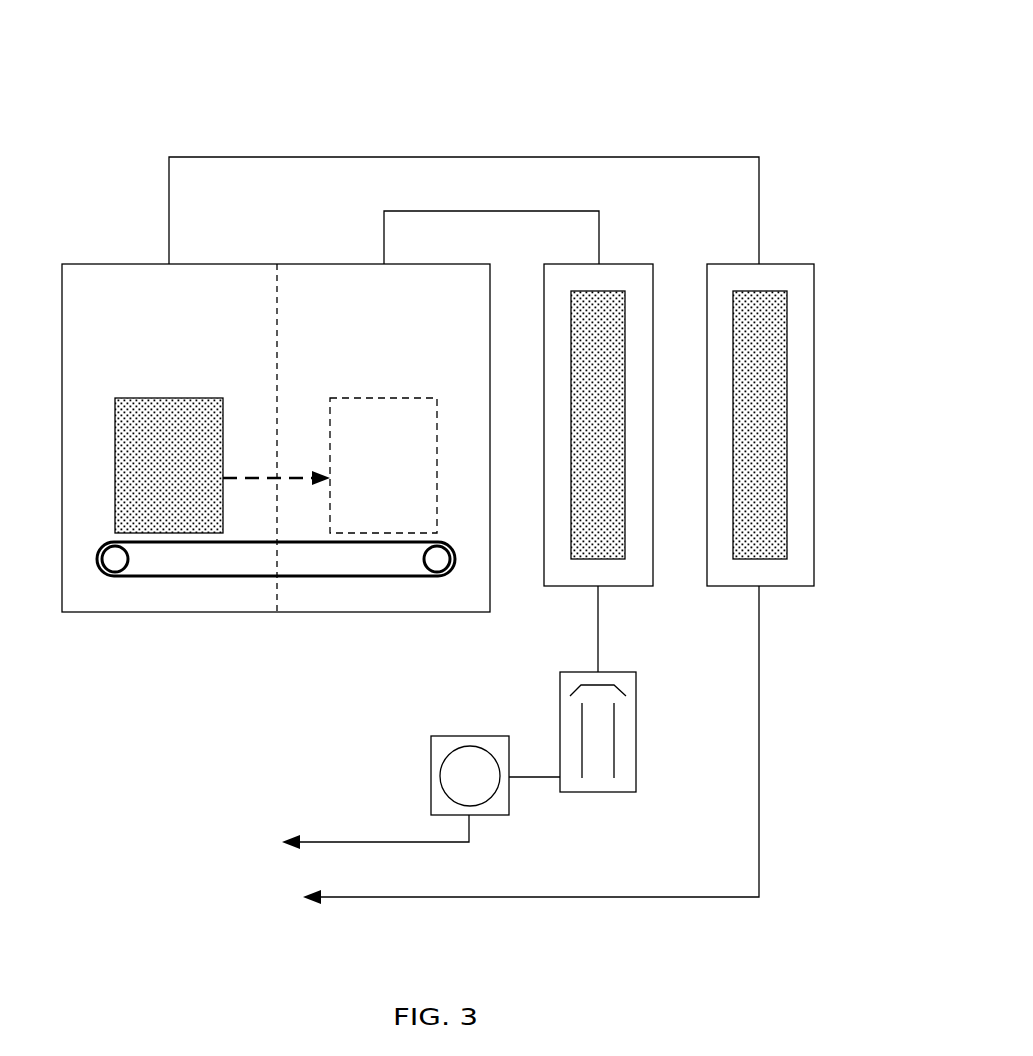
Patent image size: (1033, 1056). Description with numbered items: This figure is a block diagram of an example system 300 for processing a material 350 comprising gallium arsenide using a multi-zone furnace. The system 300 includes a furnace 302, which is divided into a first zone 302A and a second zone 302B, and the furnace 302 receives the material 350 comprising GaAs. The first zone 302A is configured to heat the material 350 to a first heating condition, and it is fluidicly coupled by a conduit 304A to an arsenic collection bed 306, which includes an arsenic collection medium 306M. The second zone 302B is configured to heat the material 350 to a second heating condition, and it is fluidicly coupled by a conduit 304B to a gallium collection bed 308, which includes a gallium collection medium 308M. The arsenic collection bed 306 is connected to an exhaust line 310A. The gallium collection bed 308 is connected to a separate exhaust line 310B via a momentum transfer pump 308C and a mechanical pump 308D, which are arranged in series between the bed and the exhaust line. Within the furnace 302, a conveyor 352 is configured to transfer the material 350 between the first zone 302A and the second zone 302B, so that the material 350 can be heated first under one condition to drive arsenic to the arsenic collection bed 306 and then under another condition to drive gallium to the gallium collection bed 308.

The system 300 is at (642, 62).
The furnace 302 is at (276, 388).
The first zone 302A is at (102, 290).
The second zone 302B is at (310, 290).
The conduit 304A is at (375, 157).
The conduit 304B is at (472, 211).
The arsenic collection bed 306 is at (749, 428).
The arsenic collection medium 306M is at (747, 545).
The gallium collection bed 308 is at (606, 428).
The gallium collection medium 308M is at (608, 548).
The momentum transfer pump 308C is at (572, 678).
The mechanical pump 308D is at (443, 742).
The exhaust line 310A is at (657, 897).
The exhaust line 310B is at (331, 842).
The material 350 is at (177, 415).
The conveyor 352 is at (175, 577).